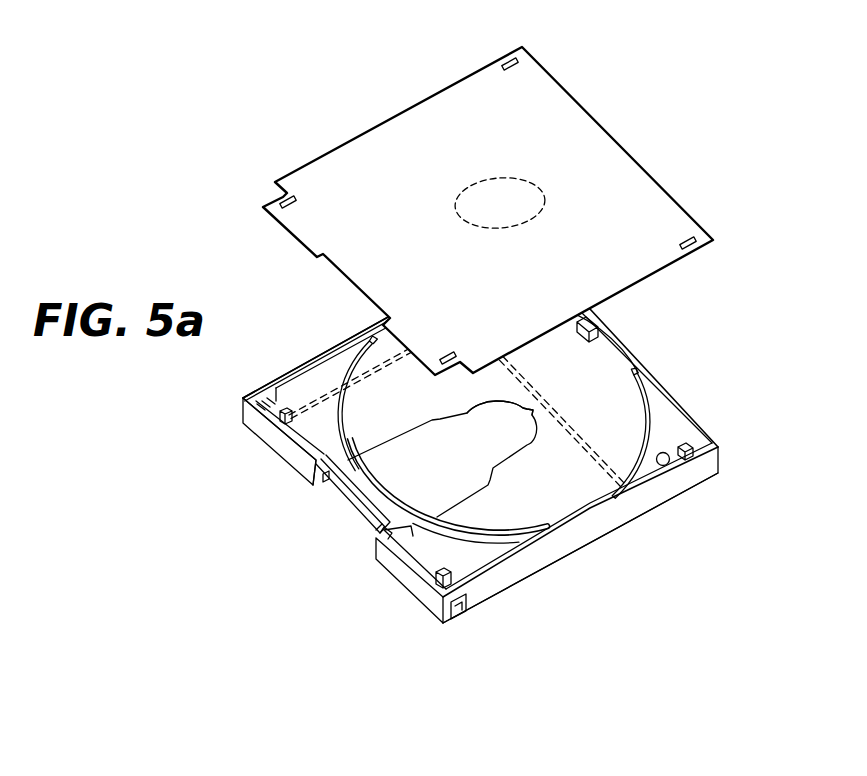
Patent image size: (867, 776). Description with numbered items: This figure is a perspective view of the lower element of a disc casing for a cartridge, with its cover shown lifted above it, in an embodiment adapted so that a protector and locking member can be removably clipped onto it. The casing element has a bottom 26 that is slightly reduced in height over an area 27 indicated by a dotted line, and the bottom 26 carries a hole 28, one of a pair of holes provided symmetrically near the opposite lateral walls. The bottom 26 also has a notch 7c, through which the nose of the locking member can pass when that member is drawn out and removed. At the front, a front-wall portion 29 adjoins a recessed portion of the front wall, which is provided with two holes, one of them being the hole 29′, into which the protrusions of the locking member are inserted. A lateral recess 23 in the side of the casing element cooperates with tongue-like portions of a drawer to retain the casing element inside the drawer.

The notch 7c is at (525, 413).
The lateral recess 23 is at (460, 615).
The bottom 26 is at (622, 430).
The area of reduced height 27 is at (551, 450).
The hole 28 is at (665, 466).
The front-wall portion 29 is at (283, 448).
The hole 29′ is at (330, 480).